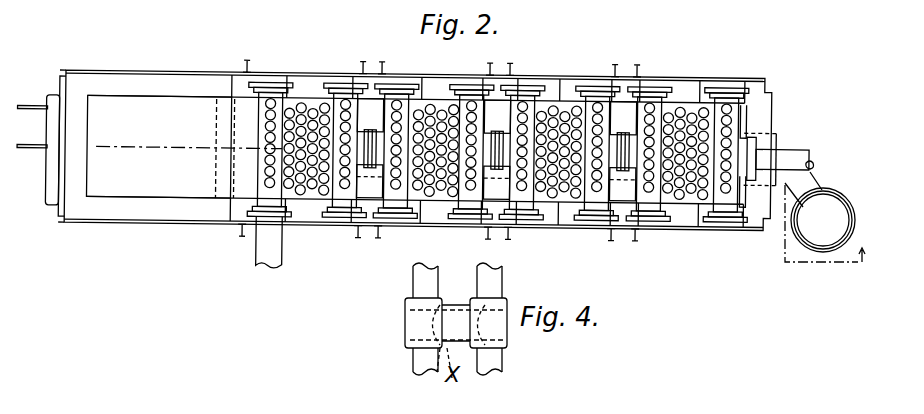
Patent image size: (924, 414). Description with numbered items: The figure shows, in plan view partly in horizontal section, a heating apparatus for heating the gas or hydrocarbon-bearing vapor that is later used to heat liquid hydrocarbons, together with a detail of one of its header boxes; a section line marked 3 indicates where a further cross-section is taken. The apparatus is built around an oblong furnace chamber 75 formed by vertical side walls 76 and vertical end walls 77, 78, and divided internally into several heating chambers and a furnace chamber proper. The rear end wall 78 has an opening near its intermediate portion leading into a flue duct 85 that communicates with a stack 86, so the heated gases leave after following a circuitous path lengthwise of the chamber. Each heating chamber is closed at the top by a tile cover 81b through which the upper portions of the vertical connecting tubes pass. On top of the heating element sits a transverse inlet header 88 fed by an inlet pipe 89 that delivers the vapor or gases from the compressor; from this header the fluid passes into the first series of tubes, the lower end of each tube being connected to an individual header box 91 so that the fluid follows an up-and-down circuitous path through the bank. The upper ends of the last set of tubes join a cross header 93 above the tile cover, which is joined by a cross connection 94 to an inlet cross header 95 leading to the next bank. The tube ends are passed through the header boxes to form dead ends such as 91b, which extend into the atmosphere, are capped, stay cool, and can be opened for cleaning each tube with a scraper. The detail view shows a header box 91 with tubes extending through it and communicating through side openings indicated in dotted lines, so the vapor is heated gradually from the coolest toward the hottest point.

In FIG. 2, the oblong furnace chamber 75 is at (183, 190).
In FIG. 2, the vertical side walls 76 is at (328, 52).
In FIG. 2, the vertical end wall 77 is at (66, 80).
In FIG. 2, the rear end wall 78 is at (767, 100).
In FIG. 2, the tile cover 81b is at (620, 58).
In FIG. 2, the dead end 91b is at (712, 72).
In FIG. 2, the flue duct 85 is at (807, 183).
In FIG. 2, the stack 86 is at (853, 203).
In FIG. 2, the transverse inlet header 88 is at (728, 207).
In FIG. 2, the inlet pipe 89 is at (795, 153).
In FIG. 2, the cross header 93 is at (650, 203).
In FIG. 2, the cross connection 94 is at (635, 163).
In FIG. 2, the inlet cross header 95 is at (597, 203).
In FIG. 4, the header box 91 is at (480, 347).
In FIG. 2, the section line 3- 3 is at (834, 233).